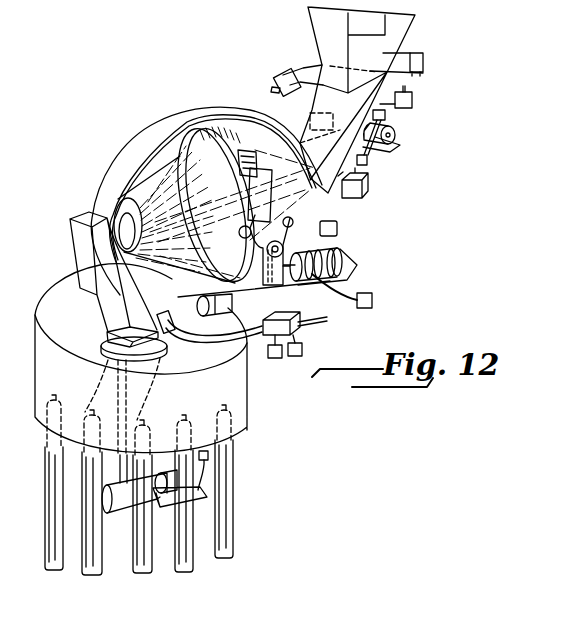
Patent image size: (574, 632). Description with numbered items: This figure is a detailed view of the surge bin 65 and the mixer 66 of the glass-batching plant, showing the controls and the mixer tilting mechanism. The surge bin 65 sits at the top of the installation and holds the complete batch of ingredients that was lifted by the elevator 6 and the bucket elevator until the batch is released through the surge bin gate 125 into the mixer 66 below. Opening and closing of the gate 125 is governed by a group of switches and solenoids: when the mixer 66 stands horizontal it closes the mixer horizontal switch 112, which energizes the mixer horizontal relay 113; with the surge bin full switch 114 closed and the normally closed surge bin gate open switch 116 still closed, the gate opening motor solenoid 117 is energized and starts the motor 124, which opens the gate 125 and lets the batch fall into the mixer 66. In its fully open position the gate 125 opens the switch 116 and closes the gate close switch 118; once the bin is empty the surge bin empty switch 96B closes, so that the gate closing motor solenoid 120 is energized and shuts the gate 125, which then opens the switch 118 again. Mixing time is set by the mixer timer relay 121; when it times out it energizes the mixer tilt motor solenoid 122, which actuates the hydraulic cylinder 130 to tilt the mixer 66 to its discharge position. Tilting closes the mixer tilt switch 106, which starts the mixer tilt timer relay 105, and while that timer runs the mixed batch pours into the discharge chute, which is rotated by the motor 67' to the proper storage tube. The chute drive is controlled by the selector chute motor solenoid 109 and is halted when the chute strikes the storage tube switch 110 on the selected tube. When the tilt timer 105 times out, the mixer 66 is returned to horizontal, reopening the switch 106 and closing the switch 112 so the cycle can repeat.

The elevator 6 is at (233, 505).
The surge bin 65 is at (402, 33).
The mixer 66 is at (150, 202).
The motor 67' is at (158, 533).
The surge bin empty switch 96B is at (423, 62).
The mixer tilt timer relay 105 is at (277, 358).
The mixer tilt switch 106 is at (167, 332).
The selector chute motor solenoid 109 is at (208, 455).
The storage tube switch 110 is at (228, 406).
The mixer horizontal switch 112 is at (337, 228).
The mixer horizontal relay 113 is at (302, 350).
The surge bin full switch 114 is at (412, 100).
The surge bin gate open switch 116 is at (362, 193).
The gate opening motor solenoid 117 is at (385, 115).
The gate close switch 118 is at (280, 80).
The gate closing motor solenoid 120 is at (367, 160).
The mixer timer relay 121 is at (372, 300).
The mixer tilt motor solenoid 122 is at (297, 313).
The motor 124 is at (395, 137).
The surge bin gate 125 is at (343, 172).
The hydraulic cylinder 130 is at (197, 303).